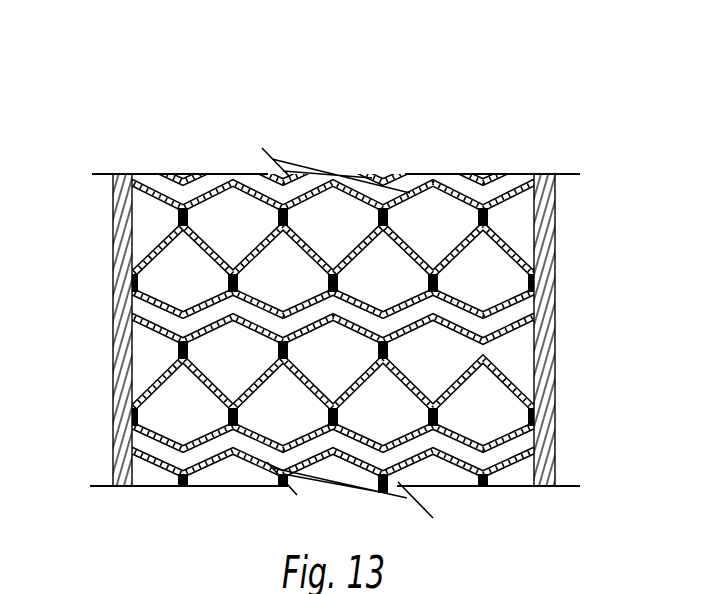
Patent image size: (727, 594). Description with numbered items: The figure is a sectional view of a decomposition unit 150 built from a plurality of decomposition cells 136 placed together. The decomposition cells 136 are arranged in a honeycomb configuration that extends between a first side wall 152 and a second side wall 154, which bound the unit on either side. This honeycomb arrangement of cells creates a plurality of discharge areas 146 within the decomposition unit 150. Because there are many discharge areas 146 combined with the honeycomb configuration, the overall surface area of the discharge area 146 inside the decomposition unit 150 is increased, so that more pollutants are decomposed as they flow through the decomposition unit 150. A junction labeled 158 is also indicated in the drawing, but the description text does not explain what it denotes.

The decomposition unit 150 is at (140, 155).
The second side wall 154 is at (113, 244).
The first side wall 152 is at (556, 341).
The discharge area 146 is at (165, 318).
The strand junction 158 is at (489, 213).
The decomposition cell 136 is at (133, 412).